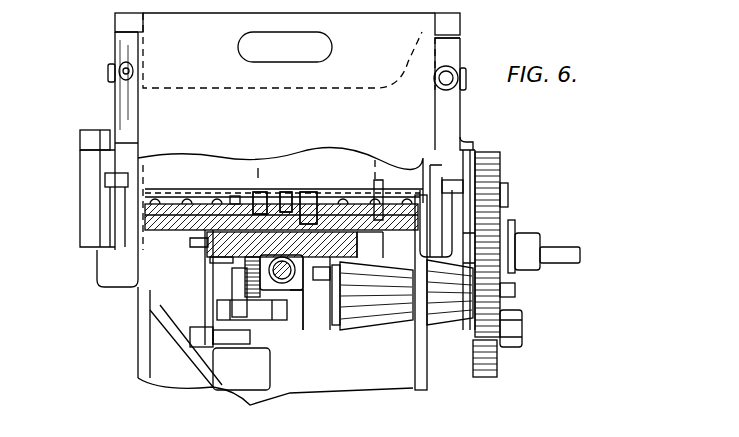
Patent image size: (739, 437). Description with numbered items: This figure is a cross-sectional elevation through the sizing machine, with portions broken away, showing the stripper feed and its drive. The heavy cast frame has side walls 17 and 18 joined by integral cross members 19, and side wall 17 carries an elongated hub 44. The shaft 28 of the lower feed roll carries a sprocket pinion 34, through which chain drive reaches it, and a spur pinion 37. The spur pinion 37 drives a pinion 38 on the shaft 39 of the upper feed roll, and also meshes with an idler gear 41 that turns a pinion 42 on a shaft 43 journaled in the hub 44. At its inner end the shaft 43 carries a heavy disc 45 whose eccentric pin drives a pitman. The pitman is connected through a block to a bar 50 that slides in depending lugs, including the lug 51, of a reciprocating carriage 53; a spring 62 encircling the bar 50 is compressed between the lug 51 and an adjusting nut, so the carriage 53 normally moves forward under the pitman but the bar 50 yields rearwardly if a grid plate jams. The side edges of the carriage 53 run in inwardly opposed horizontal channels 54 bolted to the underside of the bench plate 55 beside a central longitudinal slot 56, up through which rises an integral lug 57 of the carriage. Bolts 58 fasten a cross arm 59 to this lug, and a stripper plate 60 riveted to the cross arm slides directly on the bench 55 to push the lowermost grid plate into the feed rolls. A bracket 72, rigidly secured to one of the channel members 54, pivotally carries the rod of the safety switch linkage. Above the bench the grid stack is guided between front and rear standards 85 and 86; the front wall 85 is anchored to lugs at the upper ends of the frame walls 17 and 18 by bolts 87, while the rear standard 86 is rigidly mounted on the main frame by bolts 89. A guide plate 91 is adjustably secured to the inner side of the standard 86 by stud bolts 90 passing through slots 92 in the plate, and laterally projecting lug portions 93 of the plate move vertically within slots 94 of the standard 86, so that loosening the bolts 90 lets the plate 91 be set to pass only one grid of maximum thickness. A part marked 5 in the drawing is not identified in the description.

The motor / drive unit 5 is at (262, 176).
The side wall 17 is at (421, 373).
The side wall 18 is at (143, 352).
The cross members 19 is at (322, 380).
The shaft 28 is at (578, 253).
The sprocket pinion 34 is at (517, 232).
The spur pinion 37 is at (485, 235).
The pinion 38 is at (503, 173).
The shaft 39 is at (505, 190).
The idler gear 41 is at (490, 362).
The pinion 42 is at (500, 304).
The shaft 43 is at (515, 295).
The elongated hub 44 is at (443, 298).
The heavy disc 45 is at (327, 338).
The bar 50 is at (282, 212).
The depending lug 51 is at (297, 300).
The reciprocating carriage 53 is at (370, 240).
The horizontal channels 54 is at (210, 247).
The bench plate 55 is at (145, 220).
The central longitudinal slot 56 is at (322, 212).
The integral lug 57 is at (298, 212).
The bolts 58 is at (262, 198).
The cross arm 59 is at (235, 203).
The stripper plate 60 is at (207, 203).
The spring 62 is at (300, 303).
The bracket 72 is at (205, 313).
The front wall or standard 85 is at (473, 143).
The rear wall or standard 86 is at (453, 23).
The bolts 87 is at (115, 180).
The bolts 89 is at (97, 138).
The stud bolts 90 is at (457, 75).
The guide plate 91 is at (340, 32).
The slots 92 is at (120, 64).
The lug portions 93 is at (122, 53).
The slots 94 is at (115, 30).